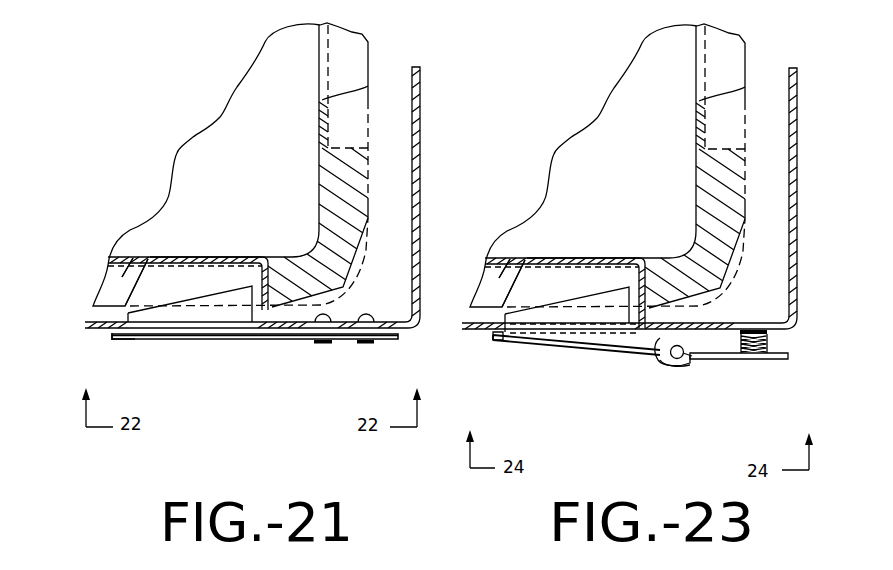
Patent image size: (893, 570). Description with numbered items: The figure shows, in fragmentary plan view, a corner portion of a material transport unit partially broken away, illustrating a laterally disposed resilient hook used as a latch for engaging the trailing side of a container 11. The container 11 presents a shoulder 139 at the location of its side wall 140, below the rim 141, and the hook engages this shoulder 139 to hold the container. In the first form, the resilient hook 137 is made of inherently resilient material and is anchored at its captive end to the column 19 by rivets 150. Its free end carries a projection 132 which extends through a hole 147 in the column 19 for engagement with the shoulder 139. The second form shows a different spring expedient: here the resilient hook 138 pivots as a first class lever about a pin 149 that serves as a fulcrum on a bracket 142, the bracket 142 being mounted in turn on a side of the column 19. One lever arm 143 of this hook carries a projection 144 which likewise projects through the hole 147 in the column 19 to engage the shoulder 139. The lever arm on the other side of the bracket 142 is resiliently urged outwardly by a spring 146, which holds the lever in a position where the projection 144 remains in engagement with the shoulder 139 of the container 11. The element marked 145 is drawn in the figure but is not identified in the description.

In FIG. 21, the container 11 is at (283, 72).
In FIG. 23, the container 11 is at (654, 60).
In FIG. 21, the column 19 is at (421, 142).
In FIG. 23, the column 19 is at (800, 88).
In FIG. 21, the projection 132 is at (222, 302).
In FIG. 21, the resilient hook 137 is at (304, 338).
In FIG. 23, the resilient hook 138 is at (660, 353).
In FIG. 21, the shoulder 139 is at (245, 283).
In FIG. 23, the shoulder 139 is at (630, 258).
In FIG. 21, the side wall 140 is at (215, 257).
In FIG. 23, the side wall 140 is at (568, 258).
In FIG. 21, the rim 141 is at (140, 257).
In FIG. 23, the rim 141 is at (510, 262).
In FIG. 23, the bracket 142 is at (680, 364).
In FIG. 23, the lever arm 143 is at (567, 340).
In FIG. 23, the projection 144 is at (603, 336).
In FIG. 23, the slide bar 145 is at (758, 360).
In FIG. 23, the spring 146 is at (788, 356).
In FIG. 21, the hole 147 is at (125, 340).
In FIG. 23, the hole 147 is at (514, 340).
In FIG. 23, the pin 149 is at (685, 355).
In FIG. 21, the rivets 150 is at (362, 345).